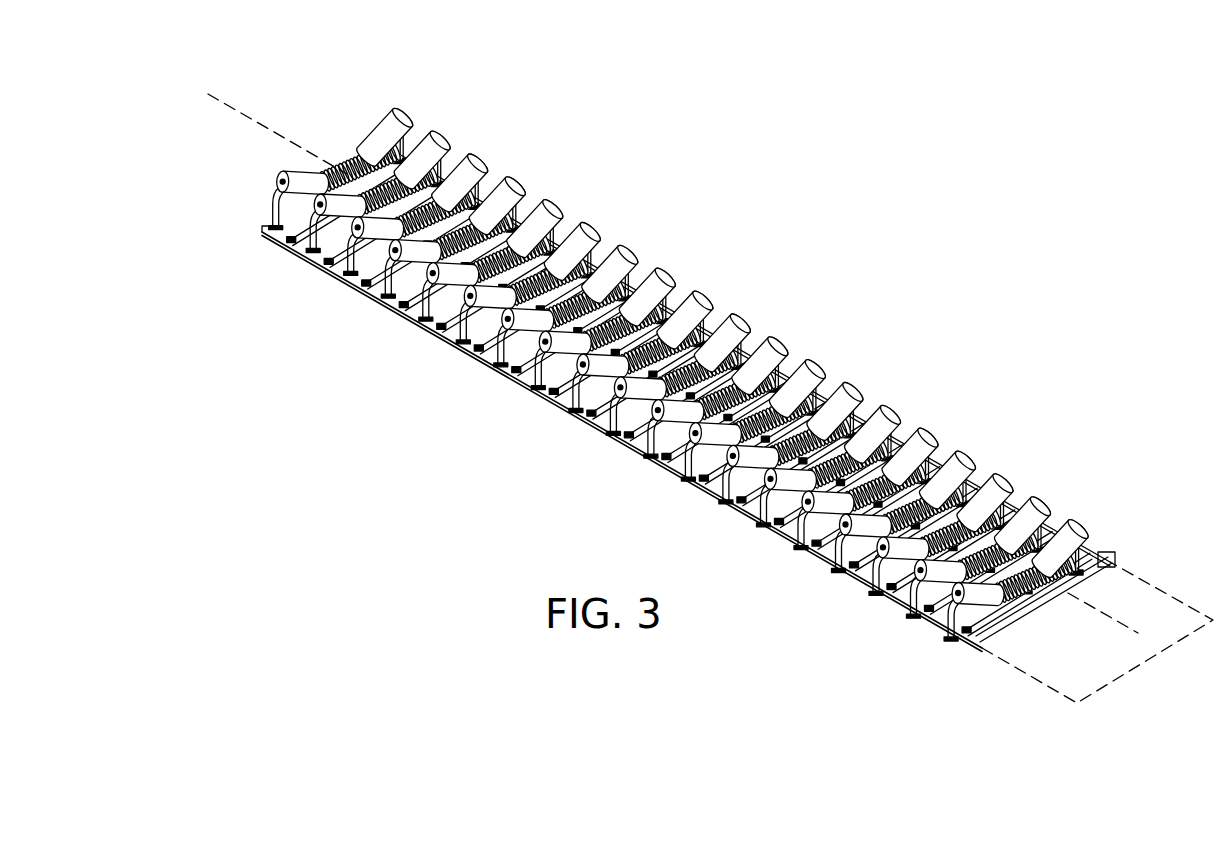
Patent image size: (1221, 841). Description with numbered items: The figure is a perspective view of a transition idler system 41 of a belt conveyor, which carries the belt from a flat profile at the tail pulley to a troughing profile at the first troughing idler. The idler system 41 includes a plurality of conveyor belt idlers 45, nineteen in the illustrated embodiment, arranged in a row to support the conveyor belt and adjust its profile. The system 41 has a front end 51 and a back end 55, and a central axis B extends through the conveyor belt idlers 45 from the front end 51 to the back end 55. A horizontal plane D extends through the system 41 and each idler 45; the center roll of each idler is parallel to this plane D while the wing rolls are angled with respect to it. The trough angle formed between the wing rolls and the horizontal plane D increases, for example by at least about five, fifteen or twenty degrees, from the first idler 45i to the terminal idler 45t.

The idler system 41 is at (663, 367).
The conveyor belt idler 45 is at (653, 267).
The terminal idler 45t is at (424, 128).
The first idler 45i is at (1107, 536).
The front end 51 is at (1030, 607).
The back end 55 is at (264, 232).
The central axis B is at (224, 100).
The horizontal plane D is at (1138, 608).